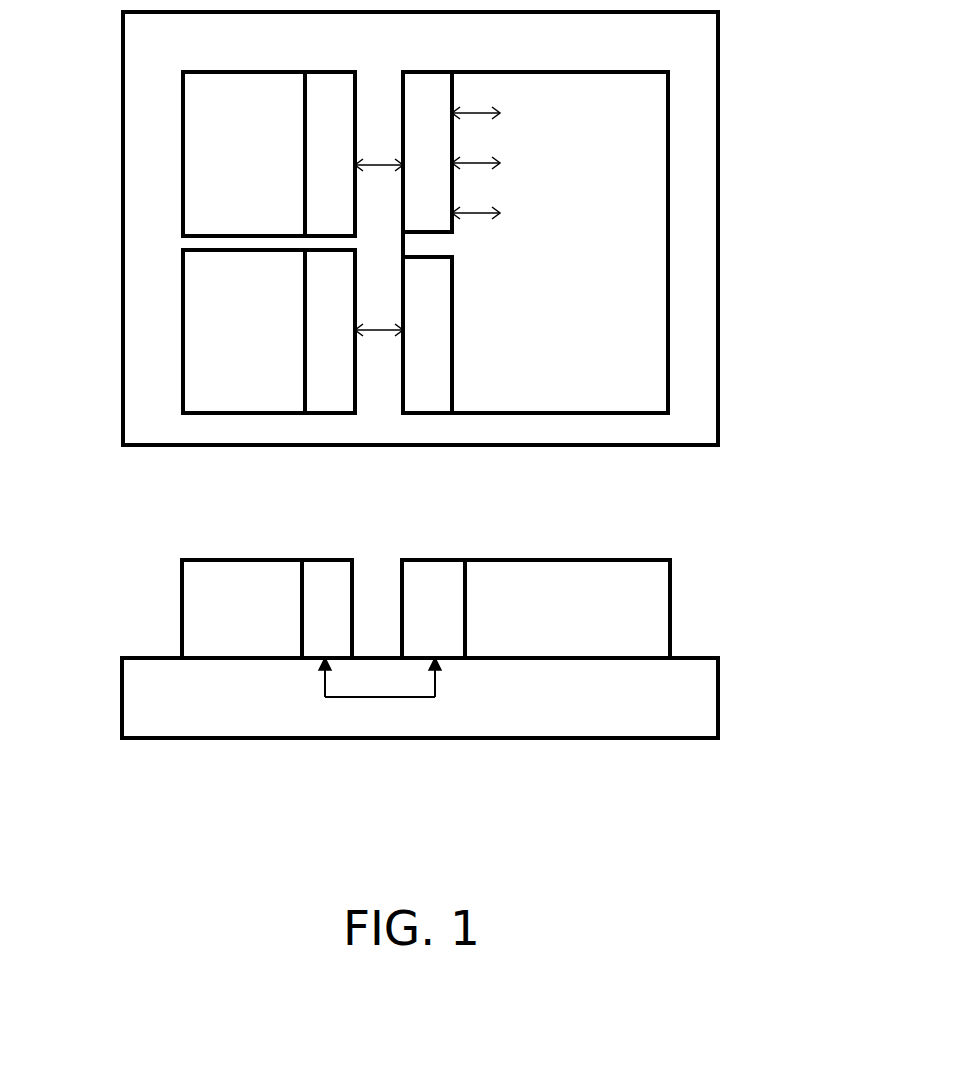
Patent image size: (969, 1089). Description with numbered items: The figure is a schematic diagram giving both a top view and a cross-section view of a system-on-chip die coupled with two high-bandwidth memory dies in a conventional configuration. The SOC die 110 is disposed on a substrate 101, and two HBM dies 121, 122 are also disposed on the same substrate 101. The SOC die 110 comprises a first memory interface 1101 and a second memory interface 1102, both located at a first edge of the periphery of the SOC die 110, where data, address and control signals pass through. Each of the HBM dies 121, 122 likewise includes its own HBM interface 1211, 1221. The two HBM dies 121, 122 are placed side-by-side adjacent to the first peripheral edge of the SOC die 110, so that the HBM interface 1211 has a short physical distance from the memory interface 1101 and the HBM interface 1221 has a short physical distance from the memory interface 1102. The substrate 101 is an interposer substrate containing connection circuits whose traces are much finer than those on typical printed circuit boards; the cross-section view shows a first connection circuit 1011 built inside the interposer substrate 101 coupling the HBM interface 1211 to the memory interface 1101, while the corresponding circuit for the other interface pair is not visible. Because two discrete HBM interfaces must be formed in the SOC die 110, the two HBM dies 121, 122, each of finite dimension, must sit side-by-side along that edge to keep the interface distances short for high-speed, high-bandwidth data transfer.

The substrate 101 is at (719, 425).
The SOC die 110 is at (598, 365).
The HBM die 121 is at (206, 454).
The HBM die 122 is at (196, 154).
The first connection circuit 1011 is at (490, 680).
The first memory interface 1101 is at (452, 375).
The second memory interface 1102 is at (453, 233).
The HBM interface 1211 is at (305, 382).
The HBM interface 1221 is at (273, 154).